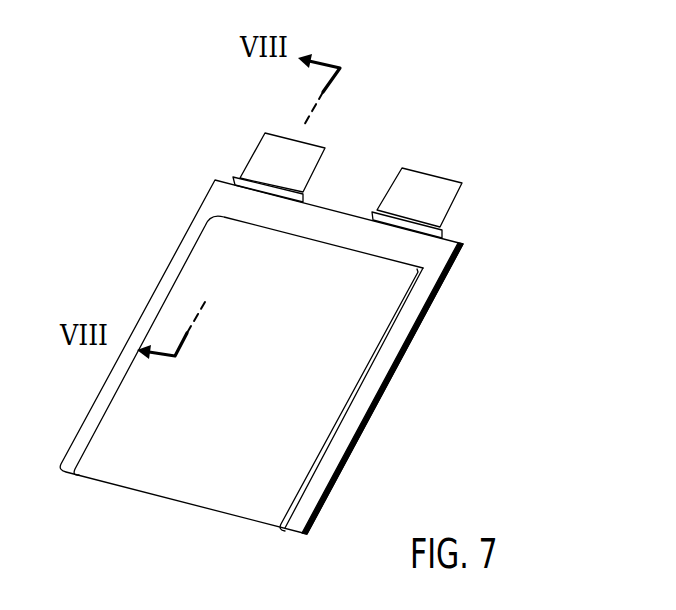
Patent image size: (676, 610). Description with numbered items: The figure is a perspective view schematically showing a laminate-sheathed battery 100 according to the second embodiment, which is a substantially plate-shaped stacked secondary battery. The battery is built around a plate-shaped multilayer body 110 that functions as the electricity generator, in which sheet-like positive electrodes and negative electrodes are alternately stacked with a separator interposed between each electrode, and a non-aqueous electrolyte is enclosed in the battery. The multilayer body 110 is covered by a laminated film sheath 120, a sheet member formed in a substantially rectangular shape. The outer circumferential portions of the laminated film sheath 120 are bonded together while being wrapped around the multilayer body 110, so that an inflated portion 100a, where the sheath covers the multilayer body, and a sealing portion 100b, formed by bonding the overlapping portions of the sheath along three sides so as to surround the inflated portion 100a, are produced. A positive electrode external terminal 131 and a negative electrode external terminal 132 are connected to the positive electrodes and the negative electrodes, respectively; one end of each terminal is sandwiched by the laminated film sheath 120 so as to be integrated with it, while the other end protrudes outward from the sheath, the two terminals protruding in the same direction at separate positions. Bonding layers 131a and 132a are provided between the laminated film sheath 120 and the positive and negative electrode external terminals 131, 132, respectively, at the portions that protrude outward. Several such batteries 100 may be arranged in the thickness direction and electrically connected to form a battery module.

The laminate-sheathed battery 100 is at (426, 119).
The inflated portion 100a is at (298, 443).
The sealing portion 100b is at (368, 403).
The multilayer body 110 is at (338, 343).
The laminated film sheath 120 is at (220, 202).
The positive electrode external terminal 131 is at (263, 157).
The bonding layer 131a is at (302, 192).
The negative electrode external terminal 132 is at (425, 203).
The bonding layer 132a is at (440, 231).